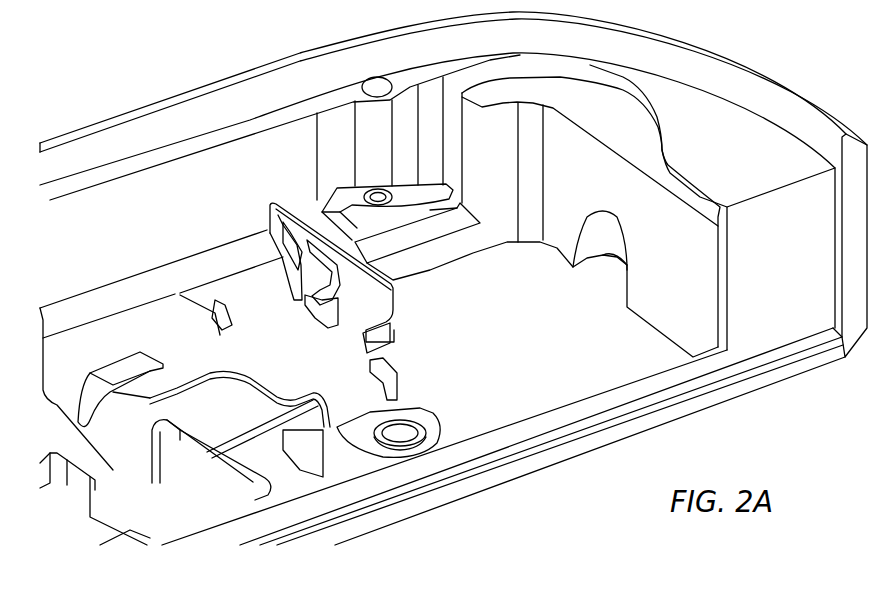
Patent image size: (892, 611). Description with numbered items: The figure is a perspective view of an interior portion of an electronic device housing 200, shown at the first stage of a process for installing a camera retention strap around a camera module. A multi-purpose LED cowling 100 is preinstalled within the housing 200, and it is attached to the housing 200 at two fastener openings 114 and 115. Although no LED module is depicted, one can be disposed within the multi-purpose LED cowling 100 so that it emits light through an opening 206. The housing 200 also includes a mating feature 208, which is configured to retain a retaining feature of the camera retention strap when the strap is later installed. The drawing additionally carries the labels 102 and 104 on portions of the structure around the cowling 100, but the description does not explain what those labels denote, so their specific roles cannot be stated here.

The electronic device housing 200 is at (155, 78).
The multi-purpose LED cowling 100 is at (263, 218).
The bracket body 102 is at (307, 359).
The spring arm 104 is at (228, 420).
The fastener opening 114 is at (402, 446).
The fastener opening 115 is at (217, 313).
The opening 206 is at (217, 485).
The mating feature 208 is at (603, 210).